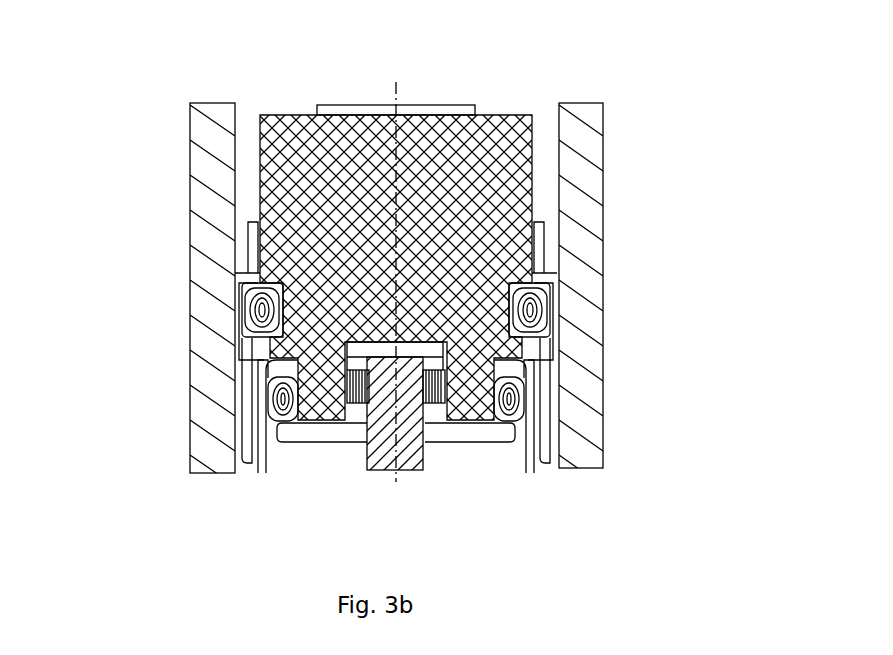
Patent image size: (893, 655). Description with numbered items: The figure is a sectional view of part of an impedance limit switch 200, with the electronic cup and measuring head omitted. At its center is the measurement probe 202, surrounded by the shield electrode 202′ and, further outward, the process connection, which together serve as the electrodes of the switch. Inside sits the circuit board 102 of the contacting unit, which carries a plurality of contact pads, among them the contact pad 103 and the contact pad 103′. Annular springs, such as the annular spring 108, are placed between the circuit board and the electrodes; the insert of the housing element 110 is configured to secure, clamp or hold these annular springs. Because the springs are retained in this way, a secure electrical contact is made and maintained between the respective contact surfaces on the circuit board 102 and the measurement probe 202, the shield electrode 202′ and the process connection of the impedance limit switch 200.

The impedance limit switch 200 is at (575, 63).
The circuit board 102 is at (497, 197).
The contact pad 103 is at (288, 295).
The contact pad 103′ is at (465, 383).
The annular spring 108 is at (282, 296).
The housing element 110 is at (495, 445).
The measurement probe 202 is at (404, 420).
The shield electrode 202′ is at (540, 430).